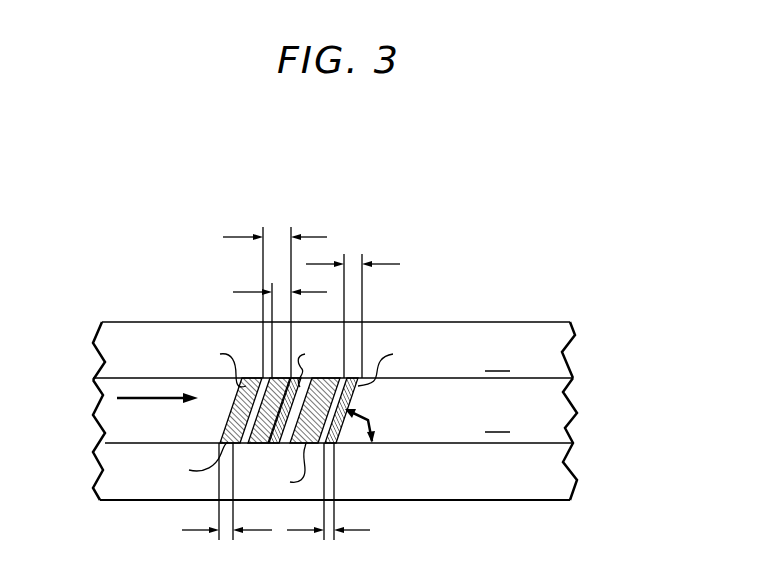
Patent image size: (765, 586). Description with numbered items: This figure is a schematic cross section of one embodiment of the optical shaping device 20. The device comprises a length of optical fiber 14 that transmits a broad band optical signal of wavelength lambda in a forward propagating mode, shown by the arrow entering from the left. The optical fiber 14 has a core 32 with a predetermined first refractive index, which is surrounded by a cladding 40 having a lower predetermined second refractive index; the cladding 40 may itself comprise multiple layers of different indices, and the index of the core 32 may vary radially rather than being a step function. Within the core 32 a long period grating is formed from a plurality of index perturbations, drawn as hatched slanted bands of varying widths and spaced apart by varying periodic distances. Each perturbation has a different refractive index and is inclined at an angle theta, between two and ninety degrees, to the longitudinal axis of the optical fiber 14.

The optical fiber 14 is at (131, 234).
The optical shaping device 20 is at (430, 165).
The core 32 is at (560, 414).
The cladding 40 is at (562, 341).